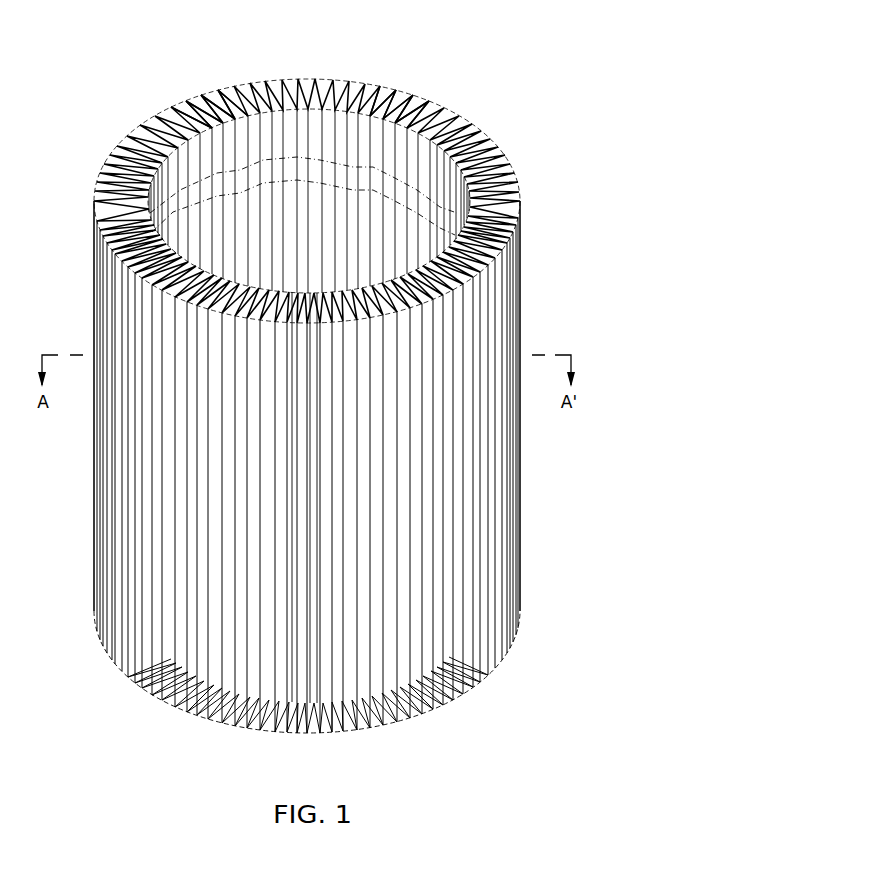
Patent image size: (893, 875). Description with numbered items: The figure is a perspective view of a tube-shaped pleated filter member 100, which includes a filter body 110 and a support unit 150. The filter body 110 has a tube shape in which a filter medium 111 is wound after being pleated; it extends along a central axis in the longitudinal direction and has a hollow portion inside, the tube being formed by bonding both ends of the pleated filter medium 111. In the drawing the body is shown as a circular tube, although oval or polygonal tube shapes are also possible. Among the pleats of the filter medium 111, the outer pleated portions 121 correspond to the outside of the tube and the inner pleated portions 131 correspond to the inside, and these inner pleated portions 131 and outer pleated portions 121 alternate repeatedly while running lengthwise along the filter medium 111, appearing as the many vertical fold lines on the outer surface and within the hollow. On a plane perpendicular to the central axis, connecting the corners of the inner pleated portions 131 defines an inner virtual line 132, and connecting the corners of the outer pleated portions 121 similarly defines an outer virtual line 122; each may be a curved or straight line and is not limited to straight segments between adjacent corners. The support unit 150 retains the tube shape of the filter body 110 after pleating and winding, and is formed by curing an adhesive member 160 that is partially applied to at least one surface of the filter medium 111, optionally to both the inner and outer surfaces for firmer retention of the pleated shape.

The tube-shaped pleated filter member 100 is at (97, 29).
The filter body 110 is at (512, 463).
The filter medium 111 is at (496, 239).
The outer pleated portions 121 is at (480, 540).
The outer virtual line 122 is at (472, 125).
The inner pleated portions 131 is at (199, 158).
The inner virtual line 132 is at (398, 138).
The support unit 150 is at (354, 168).
The adhesive member 160 is at (303, 196).